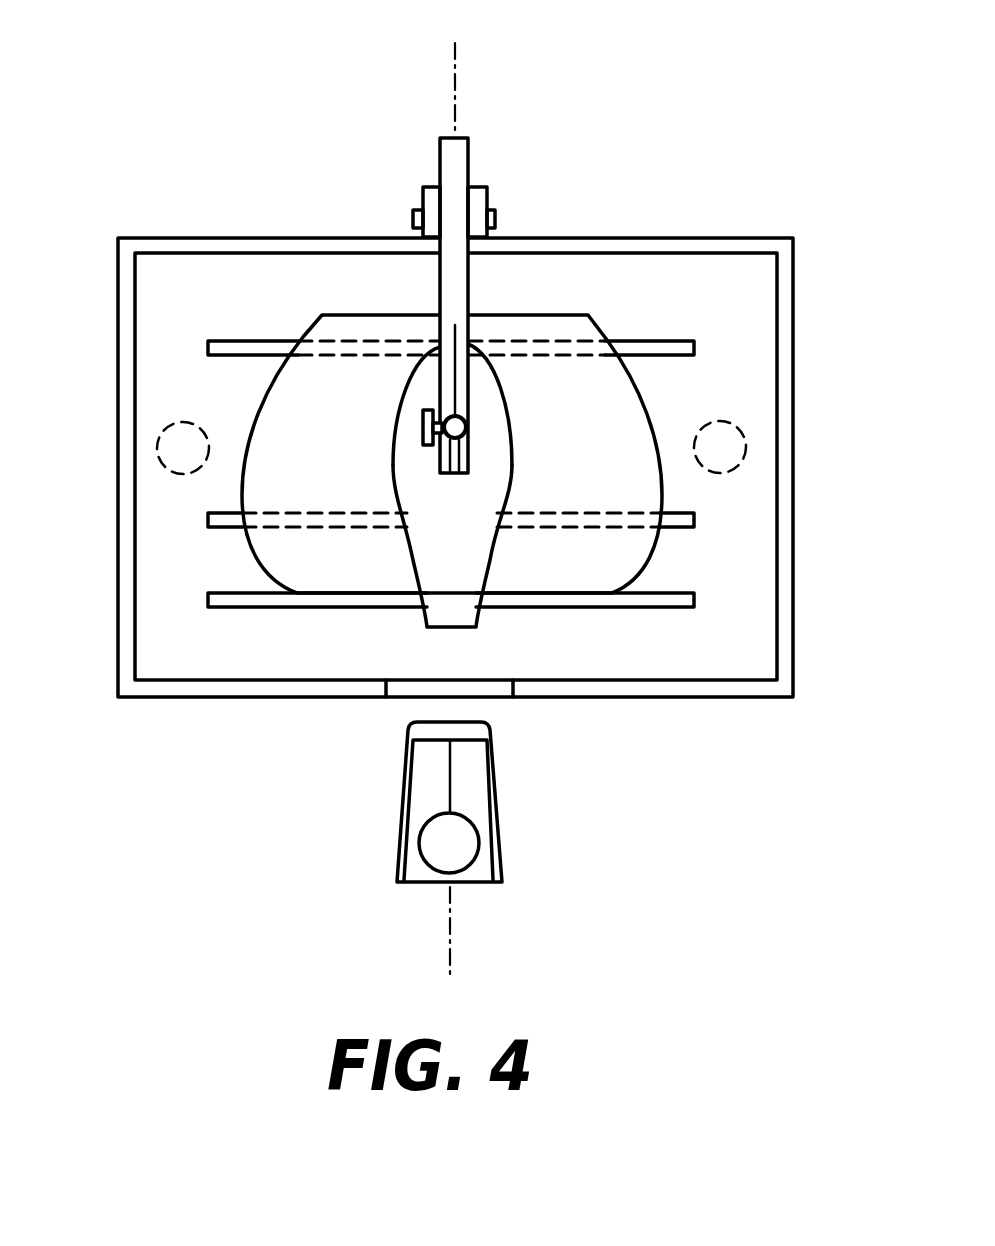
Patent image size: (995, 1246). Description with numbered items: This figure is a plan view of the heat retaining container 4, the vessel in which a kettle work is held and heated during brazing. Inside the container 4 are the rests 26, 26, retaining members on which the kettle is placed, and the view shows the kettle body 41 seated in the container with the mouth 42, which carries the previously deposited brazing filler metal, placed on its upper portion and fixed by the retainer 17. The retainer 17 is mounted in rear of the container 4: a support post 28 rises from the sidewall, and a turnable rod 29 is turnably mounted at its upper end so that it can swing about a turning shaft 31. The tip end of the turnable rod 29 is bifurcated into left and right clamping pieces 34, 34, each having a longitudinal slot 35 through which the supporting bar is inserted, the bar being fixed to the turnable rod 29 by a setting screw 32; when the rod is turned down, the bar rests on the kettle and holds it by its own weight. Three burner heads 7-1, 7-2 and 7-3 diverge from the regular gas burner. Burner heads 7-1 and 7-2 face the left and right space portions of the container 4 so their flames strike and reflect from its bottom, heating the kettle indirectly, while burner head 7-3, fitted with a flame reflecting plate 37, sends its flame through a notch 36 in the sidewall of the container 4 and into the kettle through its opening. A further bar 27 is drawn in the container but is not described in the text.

The heat retaining container 4 is at (793, 288).
The retainer 17 is at (468, 87).
The rest 26 is at (218, 343).
The support bar 27 is at (225, 608).
The support post 28 is at (477, 207).
The turnable rod 29 is at (460, 158).
The turning shaft 31 is at (415, 210).
The setting screw 32 is at (423, 428).
The clamping piece 34 is at (442, 350).
The longitudinal slot 35 is at (466, 413).
The notch 36 is at (403, 690).
The flame reflecting plate 37 is at (398, 833).
The kettle body 41 is at (613, 390).
The mouth 42 is at (468, 545).
The burner head 7-1 is at (170, 460).
The burner head 7-2 is at (733, 447).
The burner head 7-3 is at (457, 840).